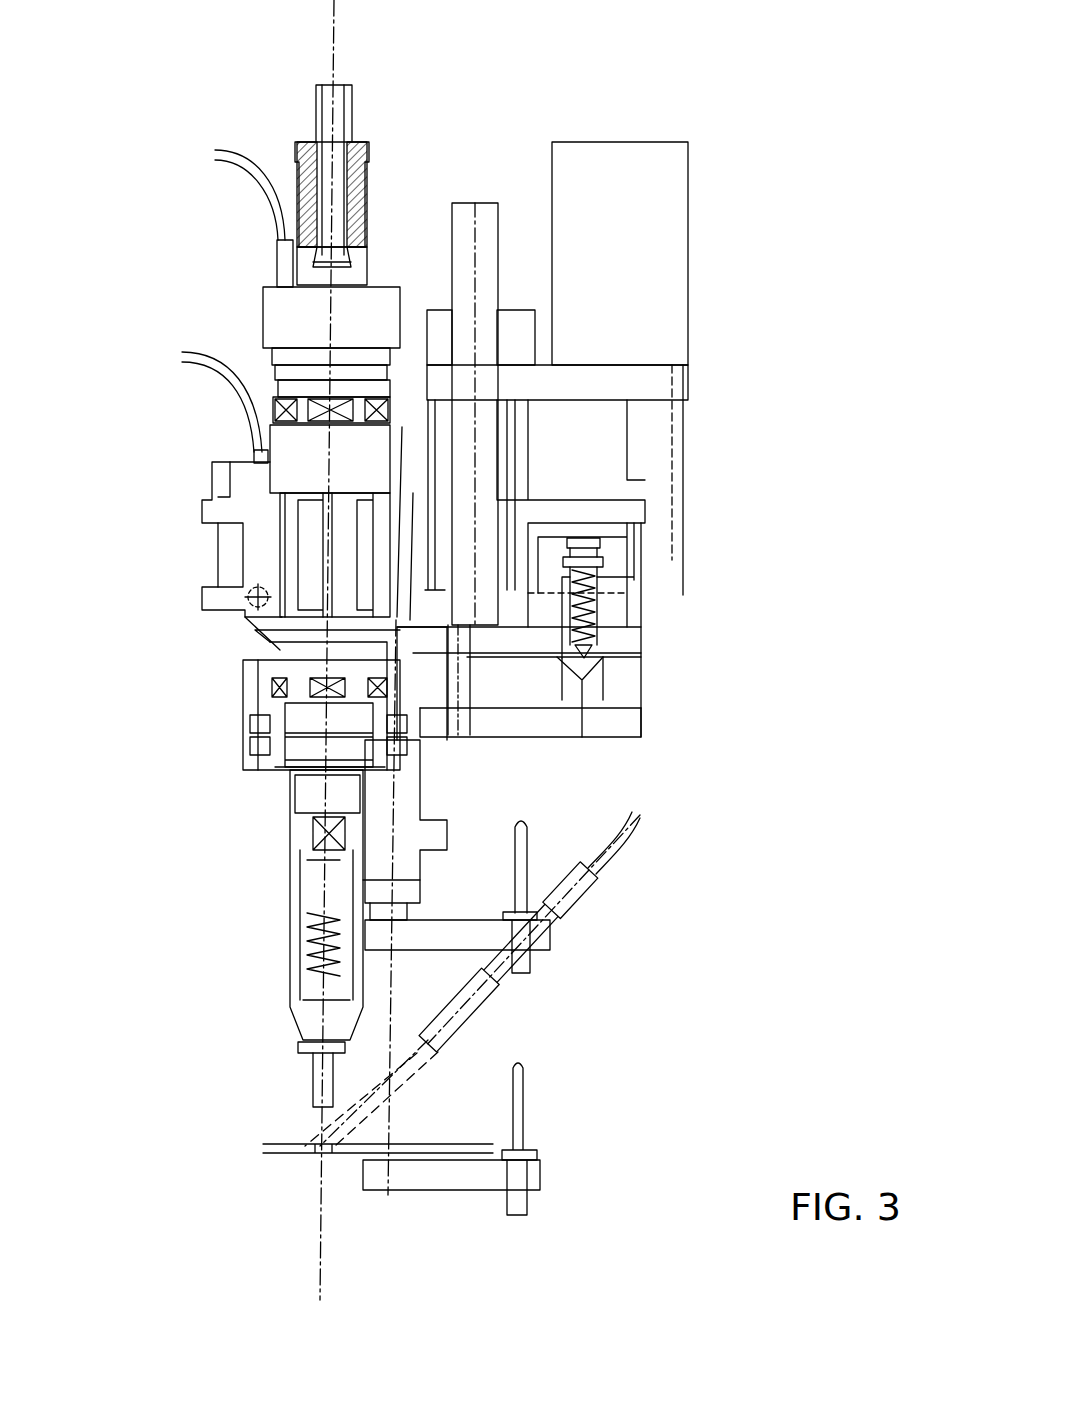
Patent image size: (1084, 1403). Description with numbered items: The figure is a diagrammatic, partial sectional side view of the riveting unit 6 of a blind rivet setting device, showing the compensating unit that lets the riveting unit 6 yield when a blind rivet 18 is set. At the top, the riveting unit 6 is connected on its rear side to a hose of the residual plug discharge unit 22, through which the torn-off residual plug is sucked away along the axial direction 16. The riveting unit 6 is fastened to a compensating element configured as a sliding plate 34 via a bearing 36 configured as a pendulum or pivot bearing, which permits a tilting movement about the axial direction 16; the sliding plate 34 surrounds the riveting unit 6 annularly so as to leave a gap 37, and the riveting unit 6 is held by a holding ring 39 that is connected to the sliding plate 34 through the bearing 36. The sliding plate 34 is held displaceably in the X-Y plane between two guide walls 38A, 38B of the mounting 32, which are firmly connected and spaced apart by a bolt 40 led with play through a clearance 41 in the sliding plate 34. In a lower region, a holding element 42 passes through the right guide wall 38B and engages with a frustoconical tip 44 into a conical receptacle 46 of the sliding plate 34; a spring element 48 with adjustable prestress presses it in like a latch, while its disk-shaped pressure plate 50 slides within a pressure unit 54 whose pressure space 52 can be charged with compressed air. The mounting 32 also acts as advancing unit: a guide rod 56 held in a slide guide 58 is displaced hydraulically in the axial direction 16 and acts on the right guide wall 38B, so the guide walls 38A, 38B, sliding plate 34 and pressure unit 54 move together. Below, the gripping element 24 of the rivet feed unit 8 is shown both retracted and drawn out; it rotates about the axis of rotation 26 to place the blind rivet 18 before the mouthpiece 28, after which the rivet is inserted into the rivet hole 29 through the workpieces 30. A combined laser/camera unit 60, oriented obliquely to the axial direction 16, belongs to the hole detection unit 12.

The riveting unit 6 is at (168, 546).
The rivet feed unit 8 is at (540, 912).
The hole detection unit 12 is at (522, 995).
The axial direction 16 is at (335, 50).
The blind rivet 18 is at (298, 1067).
The residual plug discharge unit 22 is at (352, 105).
The gripping element 24 is at (450, 1178).
The axis of rotation 26 is at (390, 1133).
The mouthpiece 28 is at (290, 885).
The rivet hole 29 is at (313, 1150).
The workpiece 30 is at (316, 1145).
The mounting 32 is at (665, 622).
The sliding plate 34 is at (633, 687).
The bearing 36 is at (253, 752).
The gap 37 is at (265, 683).
The left guide wall 38A is at (640, 723).
The right guide wall 38B is at (640, 641).
The holding ring 39 is at (270, 763).
The bolt 40 is at (458, 700).
The clearance 41 is at (470, 688).
The holding element 42 is at (605, 640).
The frustoconical tip 44 is at (640, 667).
The conical receptacle 46 is at (563, 667).
The spring element 48 is at (608, 617).
The pressure plate 50 is at (602, 568).
The pressure space 52 is at (602, 549).
The pressure unit 54 is at (609, 522).
The guide rod 56 is at (485, 222).
The slide guide 58 is at (507, 525).
The combined laser/camera unit 60 is at (548, 948).